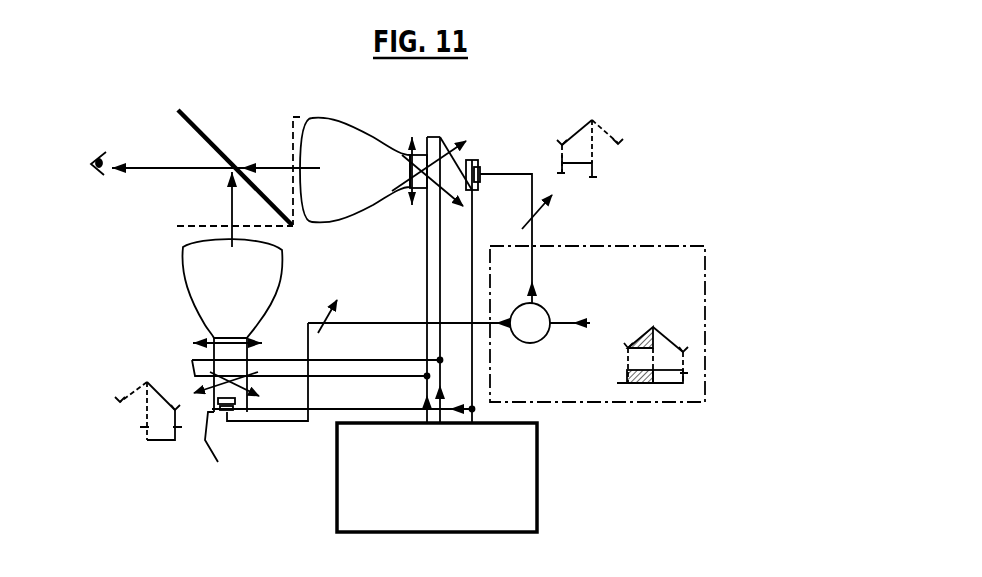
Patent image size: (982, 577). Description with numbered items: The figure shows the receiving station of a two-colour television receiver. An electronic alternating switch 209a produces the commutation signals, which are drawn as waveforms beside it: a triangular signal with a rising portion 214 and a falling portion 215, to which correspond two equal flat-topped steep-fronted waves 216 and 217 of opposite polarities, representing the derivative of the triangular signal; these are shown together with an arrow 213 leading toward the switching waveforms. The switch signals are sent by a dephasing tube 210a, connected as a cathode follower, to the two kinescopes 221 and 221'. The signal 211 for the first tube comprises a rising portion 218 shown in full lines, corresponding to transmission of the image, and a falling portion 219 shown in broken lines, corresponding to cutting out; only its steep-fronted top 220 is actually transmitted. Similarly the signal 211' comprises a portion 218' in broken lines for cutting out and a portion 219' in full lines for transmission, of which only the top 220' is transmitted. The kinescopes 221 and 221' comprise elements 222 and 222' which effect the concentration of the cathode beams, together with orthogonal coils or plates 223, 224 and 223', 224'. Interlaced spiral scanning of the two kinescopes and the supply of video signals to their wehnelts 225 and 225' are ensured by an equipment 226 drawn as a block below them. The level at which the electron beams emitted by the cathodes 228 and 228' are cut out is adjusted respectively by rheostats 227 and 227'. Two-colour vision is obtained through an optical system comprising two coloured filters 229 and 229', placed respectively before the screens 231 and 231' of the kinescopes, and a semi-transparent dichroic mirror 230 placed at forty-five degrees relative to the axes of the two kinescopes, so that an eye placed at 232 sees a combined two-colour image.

The electronic alternating switch 209a is at (629, 262).
The dephasing tube 210a is at (539, 318).
The signal 211 is at (666, 160).
The signal 211' is at (103, 440).
The beam path / reference 213 is at (616, 352).
The triangular signal rising portion 214 is at (641, 345).
The triangular signal falling portion 215 is at (656, 330).
The flat-topped steep-fronted wave 216 is at (637, 384).
The flat-topped steep-fronted wave 217 is at (666, 380).
The rising portion 218 is at (592, 109).
The rising portion 218' is at (131, 386).
The falling portion 219 is at (648, 99).
The rising portion 219' is at (170, 368).
The steep-fronted top 220 is at (596, 187).
The steep-fronted top 220' is at (168, 456).
The kinescope 221 is at (360, 154).
The kinescope 221' is at (272, 288).
The concentration element 222 is at (396, 195).
The concentration element 222' is at (196, 347).
The orthogonal coil or plate 223 is at (438, 253).
The orthogonal coil or plate 223' is at (316, 354).
The orthogonal coil or plate 224 is at (497, 141).
The orthogonal coil or plate 224' is at (227, 440).
The wehnelt 225 is at (526, 126).
The wehnelt 225' is at (286, 439).
The equipment 226 is at (503, 483).
The rheostat 227 is at (515, 212).
The rheostat 227' is at (313, 360).
The cathode 228 is at (508, 161).
The cathode 228' is at (256, 458).
The coloured filter 229 is at (319, 140).
The coloured filter 229' is at (209, 207).
The semi-transparent dichroic mirror 230 is at (203, 132).
The screen 231 is at (344, 108).
The screen 231' is at (148, 235).
The eye position 232 is at (103, 150).